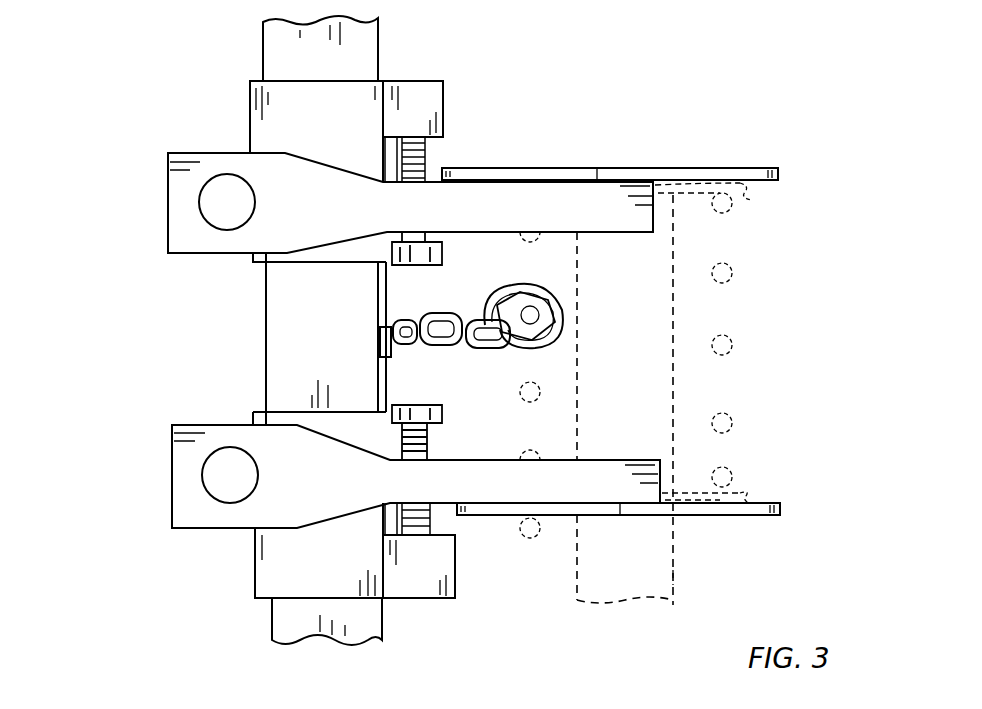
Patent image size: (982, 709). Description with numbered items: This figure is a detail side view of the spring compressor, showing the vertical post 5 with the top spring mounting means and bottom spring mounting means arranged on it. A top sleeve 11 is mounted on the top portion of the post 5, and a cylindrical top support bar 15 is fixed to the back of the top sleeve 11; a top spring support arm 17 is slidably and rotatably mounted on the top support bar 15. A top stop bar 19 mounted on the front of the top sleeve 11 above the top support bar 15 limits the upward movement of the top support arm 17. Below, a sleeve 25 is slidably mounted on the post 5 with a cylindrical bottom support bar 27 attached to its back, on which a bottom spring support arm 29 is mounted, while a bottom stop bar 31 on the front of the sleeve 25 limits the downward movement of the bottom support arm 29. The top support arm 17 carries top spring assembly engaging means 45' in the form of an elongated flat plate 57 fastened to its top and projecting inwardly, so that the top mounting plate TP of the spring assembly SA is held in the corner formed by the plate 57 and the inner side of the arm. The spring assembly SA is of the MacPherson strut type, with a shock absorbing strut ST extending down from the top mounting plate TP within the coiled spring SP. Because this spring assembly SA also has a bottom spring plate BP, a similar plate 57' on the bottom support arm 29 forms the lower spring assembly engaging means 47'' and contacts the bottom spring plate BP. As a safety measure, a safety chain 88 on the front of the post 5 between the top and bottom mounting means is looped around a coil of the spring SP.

The post 5 is at (262, 42).
The top sleeve 11 is at (250, 112).
The top support bar 15 is at (199, 193).
The top spring support arm 17 is at (213, 255).
The top stop bar 19 is at (428, 80).
The sleeve 25 is at (255, 580).
The bottom support bar 27 is at (203, 468).
The bottom spring support arm 29 is at (213, 530).
The bottom stop bar 31 is at (455, 585).
The top spring assembly engaging means 45' is at (724, 156).
The lower spring assembly engaging means 47'' is at (817, 519).
The plate 57 is at (610, 149).
The plate 57' is at (618, 547).
The safety chain 88 is at (432, 344).
The top mounting plate TP is at (752, 200).
The coiled spring SP is at (732, 342).
The spring assembly SA is at (735, 420).
The bottom spring plate BP is at (748, 490).
The shock absorbing strut ST is at (677, 577).